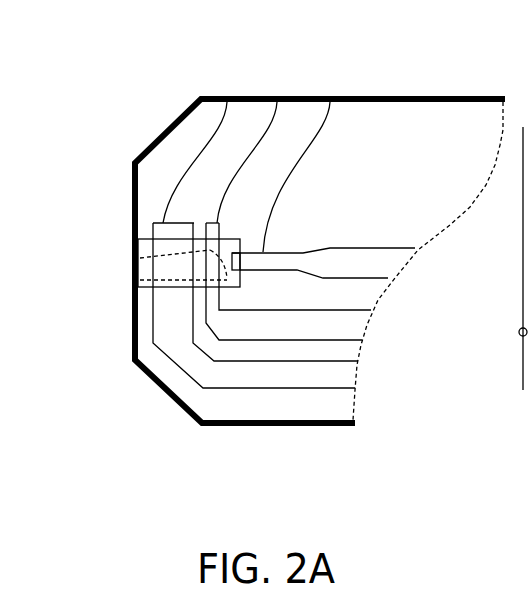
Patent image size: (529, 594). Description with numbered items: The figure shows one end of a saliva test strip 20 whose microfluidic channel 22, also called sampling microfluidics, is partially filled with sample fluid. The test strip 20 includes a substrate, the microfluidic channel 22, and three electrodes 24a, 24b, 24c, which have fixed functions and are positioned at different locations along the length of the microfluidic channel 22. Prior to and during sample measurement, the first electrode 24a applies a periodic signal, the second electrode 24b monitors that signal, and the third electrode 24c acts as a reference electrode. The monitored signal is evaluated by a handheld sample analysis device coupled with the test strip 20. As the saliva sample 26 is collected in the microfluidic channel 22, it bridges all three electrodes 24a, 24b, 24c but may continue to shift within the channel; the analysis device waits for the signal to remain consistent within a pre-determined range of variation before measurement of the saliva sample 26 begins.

The test strip 20 is at (170, 393).
The microfluidic channel 22 is at (170, 290).
The first electrode 24a is at (227, 102).
The second electrode 24b is at (277, 102).
The third electrode 24c is at (330, 102).
The saliva sample 26 is at (151, 256).